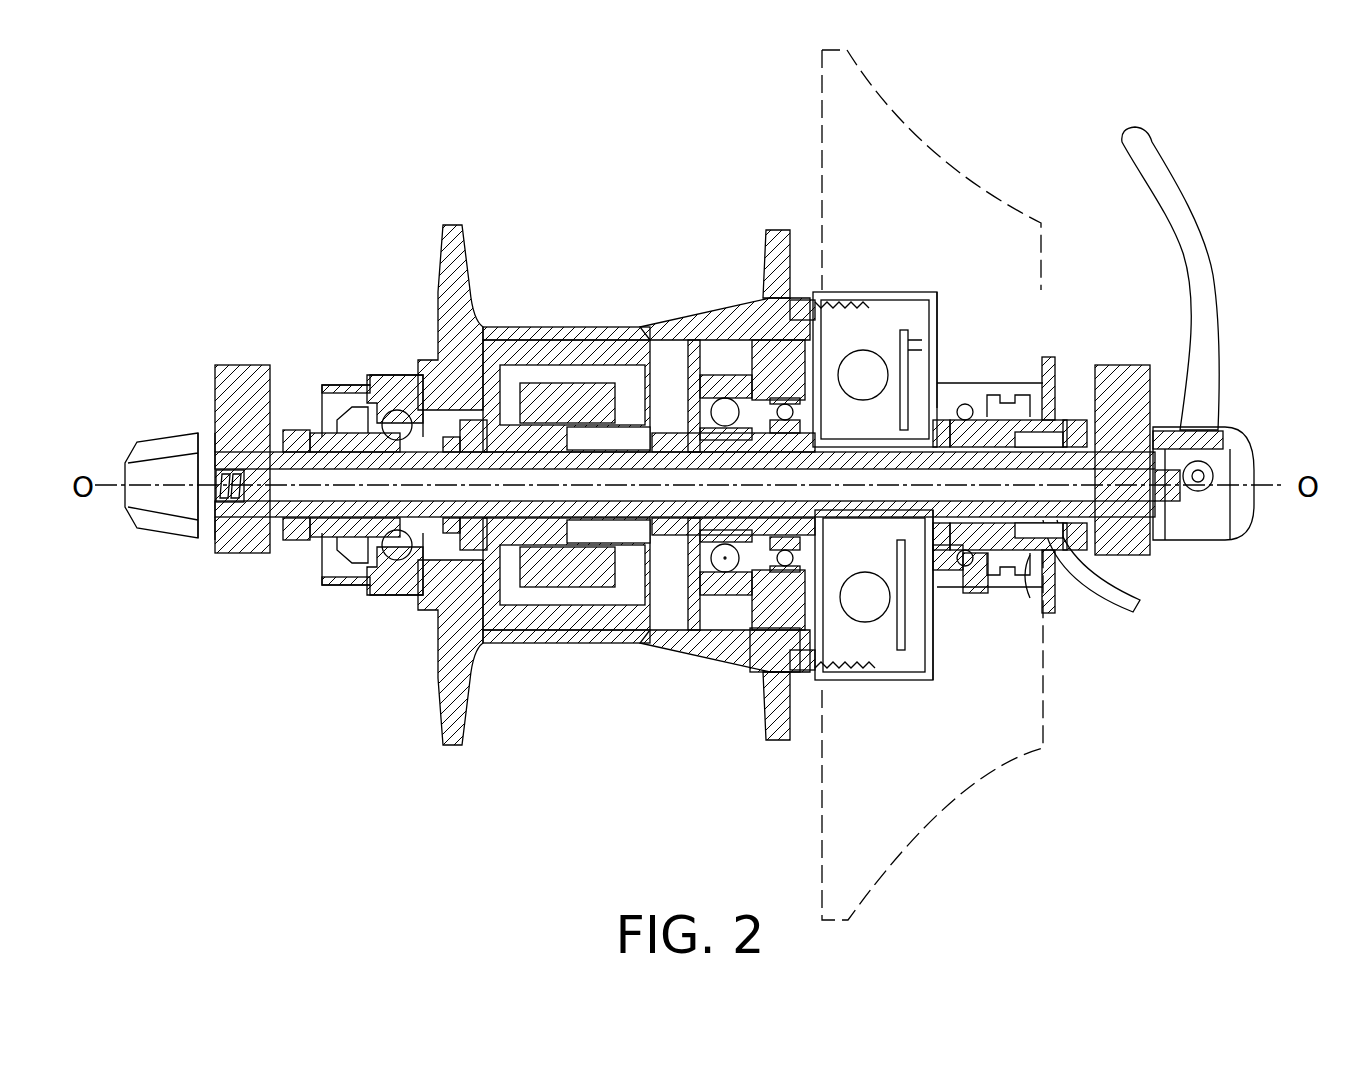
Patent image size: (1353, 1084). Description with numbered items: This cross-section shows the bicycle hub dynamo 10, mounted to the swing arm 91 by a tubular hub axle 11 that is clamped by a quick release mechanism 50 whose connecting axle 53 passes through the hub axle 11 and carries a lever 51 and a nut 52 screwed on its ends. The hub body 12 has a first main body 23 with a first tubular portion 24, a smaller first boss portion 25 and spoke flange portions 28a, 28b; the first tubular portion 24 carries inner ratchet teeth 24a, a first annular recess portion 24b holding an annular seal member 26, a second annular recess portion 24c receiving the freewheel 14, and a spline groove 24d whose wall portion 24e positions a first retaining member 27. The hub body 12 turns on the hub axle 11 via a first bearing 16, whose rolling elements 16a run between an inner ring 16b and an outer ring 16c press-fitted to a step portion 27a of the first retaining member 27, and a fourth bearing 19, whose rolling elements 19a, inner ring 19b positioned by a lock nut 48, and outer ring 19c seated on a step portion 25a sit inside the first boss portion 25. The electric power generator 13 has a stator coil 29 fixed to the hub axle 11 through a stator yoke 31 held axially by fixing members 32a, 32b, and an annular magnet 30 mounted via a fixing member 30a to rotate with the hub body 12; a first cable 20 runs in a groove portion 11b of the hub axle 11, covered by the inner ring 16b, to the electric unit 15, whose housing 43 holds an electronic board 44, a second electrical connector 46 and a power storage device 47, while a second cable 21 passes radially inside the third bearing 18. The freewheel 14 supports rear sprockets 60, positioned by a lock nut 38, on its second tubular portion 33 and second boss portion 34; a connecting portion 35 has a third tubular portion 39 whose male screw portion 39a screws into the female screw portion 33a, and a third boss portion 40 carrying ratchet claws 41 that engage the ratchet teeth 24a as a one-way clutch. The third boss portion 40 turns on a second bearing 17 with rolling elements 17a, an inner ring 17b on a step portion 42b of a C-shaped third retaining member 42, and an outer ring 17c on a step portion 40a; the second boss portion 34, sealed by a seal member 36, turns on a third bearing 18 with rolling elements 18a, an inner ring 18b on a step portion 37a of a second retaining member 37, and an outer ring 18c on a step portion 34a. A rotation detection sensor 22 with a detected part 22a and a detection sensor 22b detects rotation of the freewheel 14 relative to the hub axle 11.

The bicycle hub dynamo 10 is at (978, 110).
The hub axle 11 is at (624, 520).
The groove portion 11b is at (600, 520).
The hub body 12 is at (410, 238).
The electric power generator 13 is at (530, 648).
The freewheel 14 is at (922, 285).
The electric unit 15 is at (942, 300).
The first bearing 16 is at (700, 372).
The rolling elements 16a is at (705, 378).
The inner ring 16b is at (700, 395).
The outer ring 16c is at (692, 342).
The second bearing 17 is at (746, 580).
The rolling elements 17a is at (838, 420).
The inner ring 17b is at (838, 412).
The outer ring 17c is at (825, 330).
The third bearing 18 is at (986, 602).
The rolling elements 18a is at (960, 405).
The inner ring 18b is at (990, 398).
The outer ring 18c is at (1022, 360).
The fourth bearing 19 is at (403, 592).
The rolling elements 19a is at (395, 572).
The inner ring 19b is at (335, 545).
The outer ring 19c is at (425, 578).
The first cable 20 is at (598, 633).
The second cable 21 is at (1110, 605).
The rotation detection sensor 22 is at (912, 449).
The detected part 22a is at (965, 345).
The detection sensor 22b is at (960, 320).
The first main body 23 is at (590, 270).
The first tubular portion 24 is at (565, 330).
The ratchet teeth 24a is at (700, 330).
The first annular recess portion 24b is at (828, 315).
The second annular recess portion 24c is at (790, 300).
The spline groove 24d is at (740, 662).
The wall portion 24e is at (680, 642).
The first boss portion 25 is at (378, 372).
The step portion 25a is at (398, 408).
The annular seal member 26 is at (805, 300).
The first retaining member 27 is at (700, 672).
The step portion 27a is at (645, 634).
The flange portion 28a is at (776, 232).
The flange portion 28b is at (455, 226).
The stator coil 29 is at (550, 645).
The magnet 30 is at (484, 705).
The fixing member 30a is at (455, 652).
The stator yoke 31 is at (518, 612).
The fixing member 32a is at (470, 395).
The fixing member 32b is at (563, 328).
The second tubular portion 33 is at (893, 290).
The female screw portion 33a is at (842, 685).
The second boss portion 34 is at (1050, 362).
The step portion 34a is at (976, 592).
The connecting portion 35 is at (760, 336).
The seal member 36 is at (1003, 592).
The second retaining member 37 is at (1028, 408).
The step portion 37a is at (973, 456).
The lock nut 38 is at (1060, 378).
The third tubular portion 39 is at (792, 745).
The male screw portion 39a is at (792, 715).
The third boss portion 40 is at (775, 735).
The step portion 40a is at (800, 468).
The ratchet claw 41 is at (790, 740).
The third retaining member 42 is at (772, 440).
The step portion 42b is at (772, 446).
The housing 43 is at (915, 602).
The electronic board 44 is at (897, 605).
The second electrical connector 46 is at (940, 568).
The power storage device 47 is at (755, 690).
The lock nut 48 is at (300, 428).
The quick release mechanism 50 is at (1258, 408).
The lever 51 is at (1168, 190).
The nut 52 is at (165, 560).
The connecting axle 53 is at (240, 556).
The rear sprocket 60 is at (858, 82).
The swing arm 91 is at (243, 380).